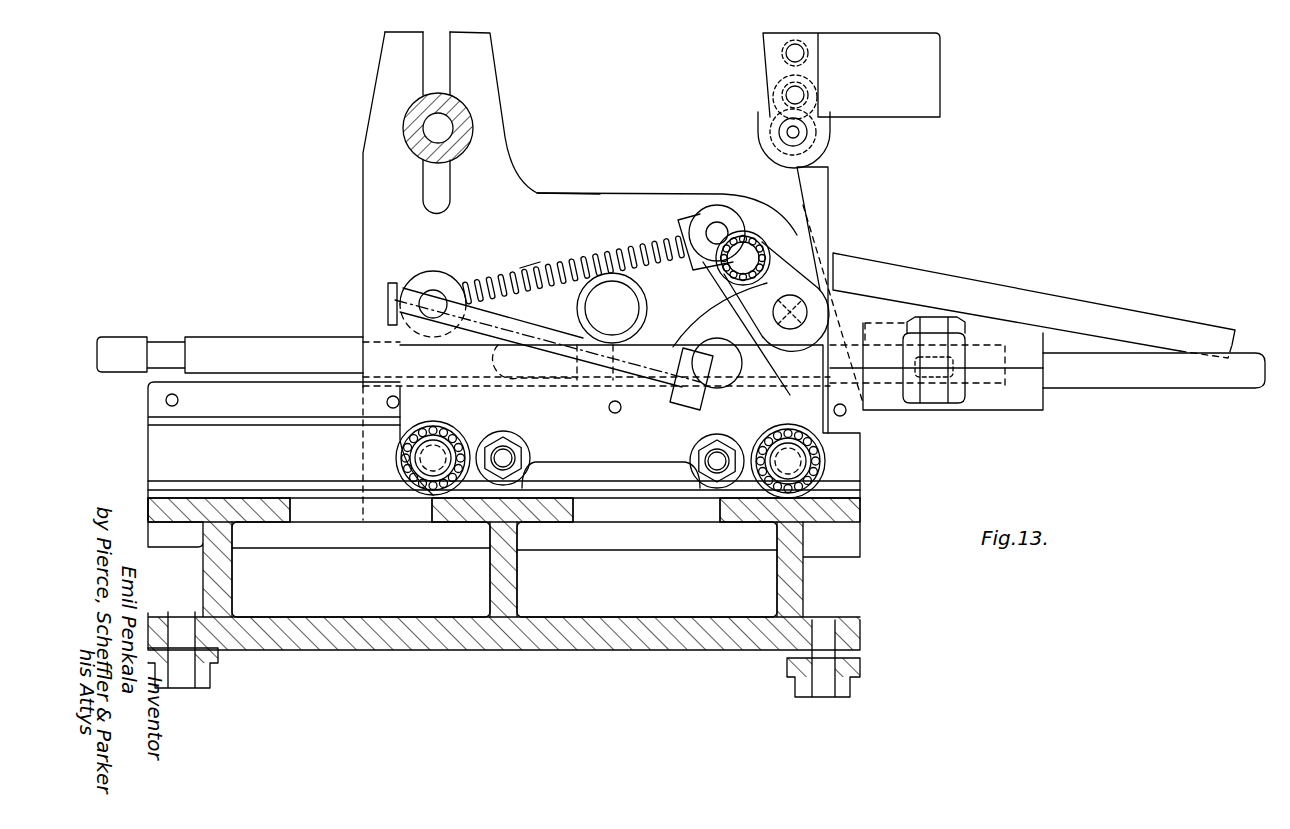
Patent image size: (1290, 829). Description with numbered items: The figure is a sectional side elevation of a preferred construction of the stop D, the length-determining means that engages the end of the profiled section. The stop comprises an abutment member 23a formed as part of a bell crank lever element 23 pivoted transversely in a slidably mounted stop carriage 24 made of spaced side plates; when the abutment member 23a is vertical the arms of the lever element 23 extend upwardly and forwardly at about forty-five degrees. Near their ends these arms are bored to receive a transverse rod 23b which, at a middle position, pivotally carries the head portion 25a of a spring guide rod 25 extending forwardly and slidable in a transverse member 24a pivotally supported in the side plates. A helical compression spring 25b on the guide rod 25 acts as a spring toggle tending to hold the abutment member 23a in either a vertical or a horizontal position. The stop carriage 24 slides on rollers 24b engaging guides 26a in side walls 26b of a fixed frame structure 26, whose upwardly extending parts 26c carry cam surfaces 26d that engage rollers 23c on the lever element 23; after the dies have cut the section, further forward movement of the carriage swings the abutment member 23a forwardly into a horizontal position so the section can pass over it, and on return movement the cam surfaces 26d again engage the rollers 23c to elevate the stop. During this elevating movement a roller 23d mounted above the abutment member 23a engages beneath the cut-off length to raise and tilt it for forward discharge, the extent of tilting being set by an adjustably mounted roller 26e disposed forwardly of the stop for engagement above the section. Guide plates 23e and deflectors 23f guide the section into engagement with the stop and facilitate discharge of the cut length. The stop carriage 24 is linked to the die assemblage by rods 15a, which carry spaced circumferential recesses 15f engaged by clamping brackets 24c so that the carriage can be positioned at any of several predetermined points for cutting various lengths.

The rods 15a is at (1143, 380).
The circumferential recesses 15f is at (170, 342).
The bell crank lever element 23 is at (712, 268).
The abutment member 23a is at (832, 219).
The transverse rod 23b is at (720, 226).
The rollers 23c is at (750, 238).
The roller 23d is at (827, 153).
The guide plates 23e is at (1020, 300).
The deflectors 23f is at (940, 118).
The stop carriage 24 is at (610, 452).
The transverse member 24a is at (435, 290).
The rollers 24b is at (437, 430).
The clamping brackets 24c is at (1012, 403).
The spring guide rod 25 is at (506, 284).
The head portion 25a is at (683, 222).
The helical compression spring 25b is at (527, 272).
The fixed frame structure 26 is at (170, 547).
The guides 26a is at (504, 470).
The side walls 26b is at (150, 418).
The upwardly extending parts 26c is at (372, 237).
The cam surfaces 26d is at (522, 313).
The adjustably mounted roller 26e is at (405, 121).
The stop D is at (533, 179).